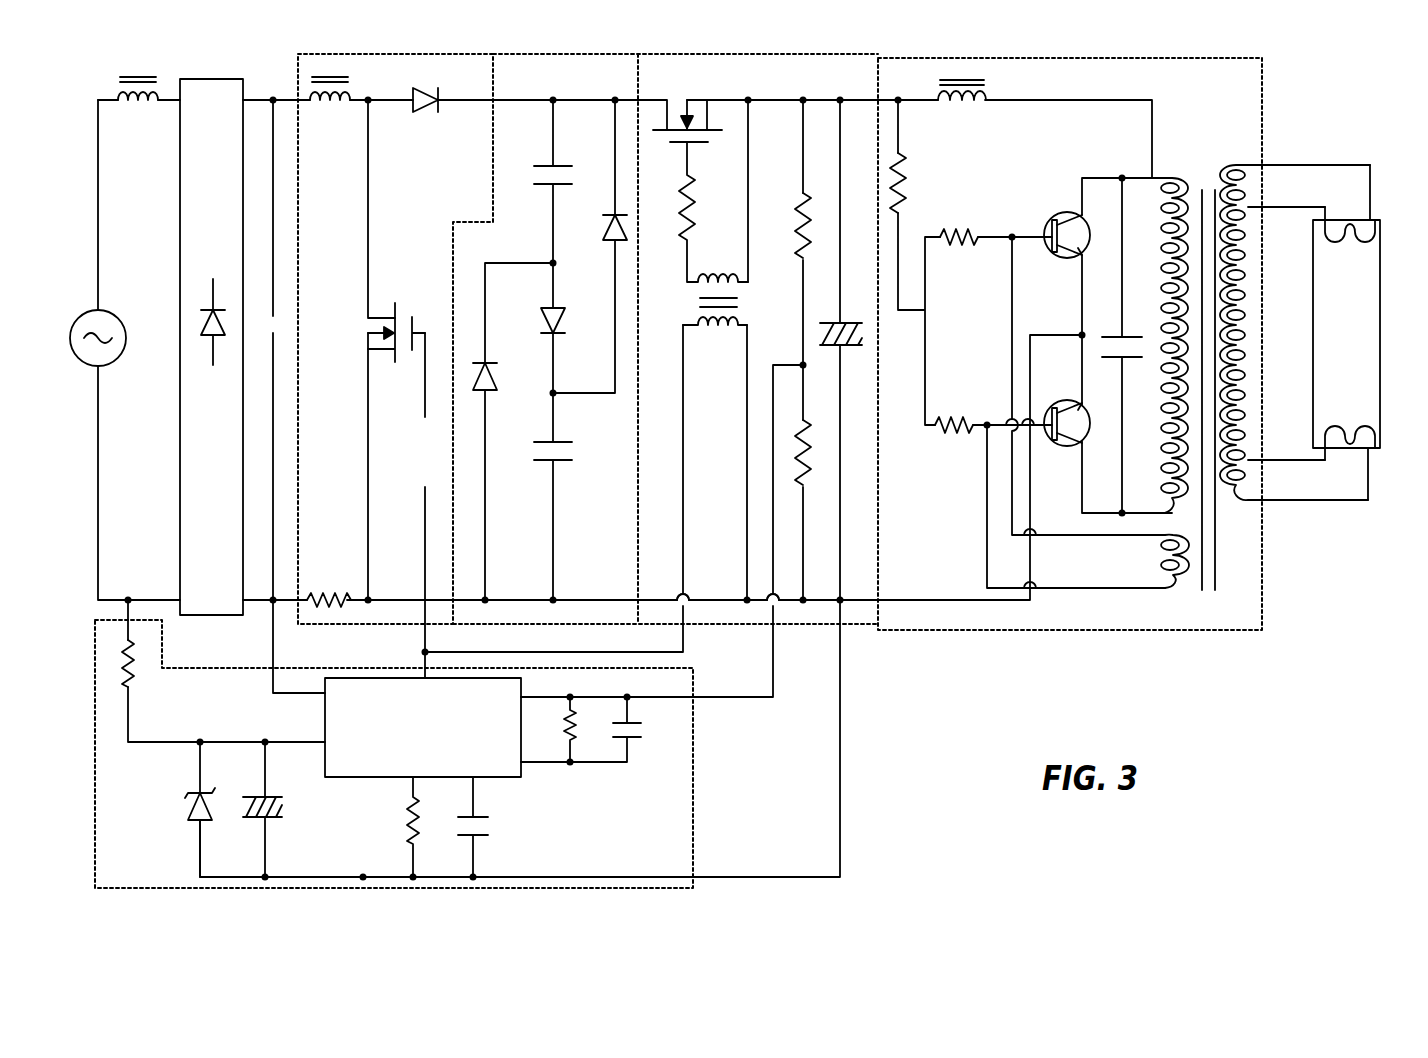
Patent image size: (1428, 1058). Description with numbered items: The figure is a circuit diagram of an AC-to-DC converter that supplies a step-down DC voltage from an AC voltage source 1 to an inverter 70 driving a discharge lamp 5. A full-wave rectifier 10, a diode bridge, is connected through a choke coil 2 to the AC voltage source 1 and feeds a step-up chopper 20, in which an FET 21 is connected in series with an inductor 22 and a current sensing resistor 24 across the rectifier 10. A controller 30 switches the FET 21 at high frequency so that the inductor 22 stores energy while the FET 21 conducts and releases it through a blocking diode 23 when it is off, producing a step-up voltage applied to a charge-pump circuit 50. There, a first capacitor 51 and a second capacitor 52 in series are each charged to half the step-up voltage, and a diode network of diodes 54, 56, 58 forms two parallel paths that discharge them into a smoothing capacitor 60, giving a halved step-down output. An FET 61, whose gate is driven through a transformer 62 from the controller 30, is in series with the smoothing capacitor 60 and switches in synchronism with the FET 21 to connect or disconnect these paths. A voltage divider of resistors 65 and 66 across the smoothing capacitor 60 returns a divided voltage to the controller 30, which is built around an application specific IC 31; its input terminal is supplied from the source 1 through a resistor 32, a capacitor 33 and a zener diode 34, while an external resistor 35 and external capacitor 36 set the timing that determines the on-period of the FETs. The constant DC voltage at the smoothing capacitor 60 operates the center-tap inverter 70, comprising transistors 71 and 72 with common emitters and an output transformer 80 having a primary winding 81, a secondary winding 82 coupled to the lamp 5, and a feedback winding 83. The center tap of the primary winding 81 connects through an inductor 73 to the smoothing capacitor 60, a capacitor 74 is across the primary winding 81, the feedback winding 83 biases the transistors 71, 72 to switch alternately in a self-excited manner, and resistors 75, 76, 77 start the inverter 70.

The AC voltage source 1 is at (86, 366).
The choke coil 2 is at (133, 110).
The discharge lamp 5 is at (1308, 300).
The full-wave rectifier 10 is at (200, 78).
The step-up chopper 20 is at (298, 70).
The FET 21 is at (358, 345).
The inductor 22 is at (330, 112).
The blocking diode 23 is at (422, 113).
The current sensing resistor 24 is at (327, 583).
The controller 30 is at (693, 773).
The application specific IC 31 is at (522, 780).
The resistor 32 is at (140, 668).
The capacitor 33 is at (290, 815).
The zener diode 34 is at (178, 805).
The external resistor 35 is at (430, 825).
The external capacitor 36 is at (500, 822).
The charge-pump circuit 50 is at (545, 54).
The first capacitor 51 is at (528, 176).
The second capacitor 52 is at (527, 457).
The diode 54 is at (560, 328).
The diode 56 is at (498, 377).
The diode 58 is at (602, 250).
The smoothing capacitor 60 is at (835, 322).
The FET 61 is at (698, 146).
The transformer 62 is at (716, 340).
The resistor 65 is at (790, 220).
The resistor 66 is at (812, 460).
The inverter 70 is at (905, 58).
The transistor 71 is at (1045, 217).
The transistor 72 is at (1060, 445).
The inductor 73 is at (968, 117).
The capacitor 74 is at (1130, 365).
The resistor 75 is at (910, 170).
The resistor 76 is at (955, 250).
The resistor 77 is at (960, 410).
The output transformer 80 is at (1205, 175).
The primary winding 81 is at (1170, 172).
The secondary winding 82 is at (1236, 512).
The feedback winding 83 is at (1178, 585).